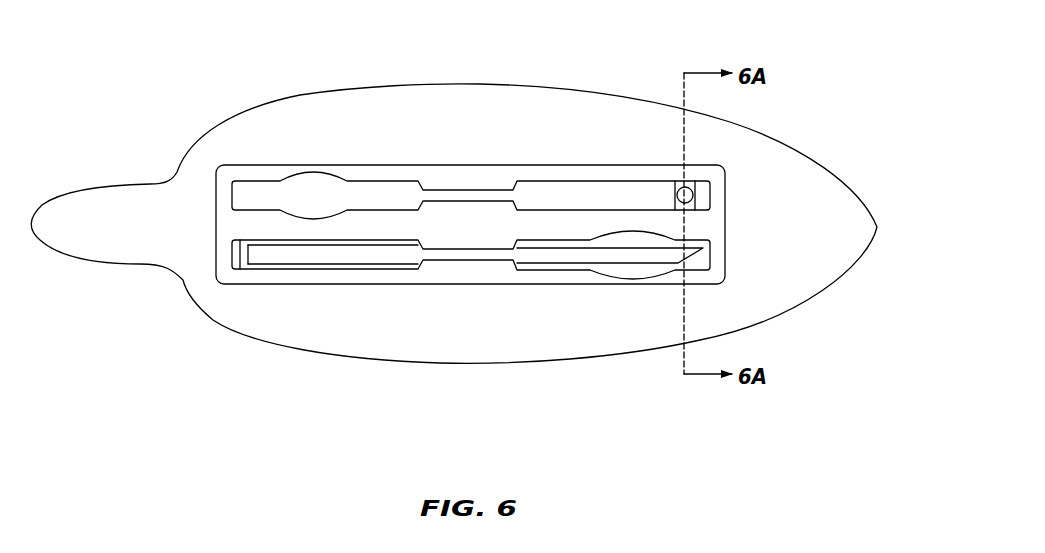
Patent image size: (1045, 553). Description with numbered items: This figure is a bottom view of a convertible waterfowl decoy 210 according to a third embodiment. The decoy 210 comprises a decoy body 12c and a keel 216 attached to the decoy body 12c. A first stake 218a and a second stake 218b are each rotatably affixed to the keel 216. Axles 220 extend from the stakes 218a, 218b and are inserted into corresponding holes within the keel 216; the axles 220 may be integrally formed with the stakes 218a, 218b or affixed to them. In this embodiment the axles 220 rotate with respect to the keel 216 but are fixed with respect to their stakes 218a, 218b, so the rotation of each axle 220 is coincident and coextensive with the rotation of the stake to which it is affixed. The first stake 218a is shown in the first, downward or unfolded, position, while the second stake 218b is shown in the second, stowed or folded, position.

The decoy 210 is at (488, 218).
The decoy body 12c is at (270, 104).
The keel 216 is at (472, 165).
The first stake 218a is at (694, 197).
The second stake 218b is at (357, 255).
The axles 220 is at (250, 246).